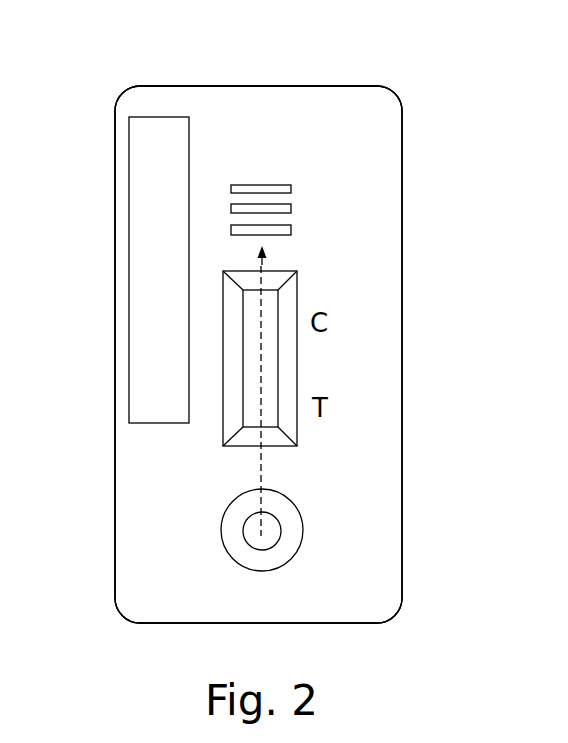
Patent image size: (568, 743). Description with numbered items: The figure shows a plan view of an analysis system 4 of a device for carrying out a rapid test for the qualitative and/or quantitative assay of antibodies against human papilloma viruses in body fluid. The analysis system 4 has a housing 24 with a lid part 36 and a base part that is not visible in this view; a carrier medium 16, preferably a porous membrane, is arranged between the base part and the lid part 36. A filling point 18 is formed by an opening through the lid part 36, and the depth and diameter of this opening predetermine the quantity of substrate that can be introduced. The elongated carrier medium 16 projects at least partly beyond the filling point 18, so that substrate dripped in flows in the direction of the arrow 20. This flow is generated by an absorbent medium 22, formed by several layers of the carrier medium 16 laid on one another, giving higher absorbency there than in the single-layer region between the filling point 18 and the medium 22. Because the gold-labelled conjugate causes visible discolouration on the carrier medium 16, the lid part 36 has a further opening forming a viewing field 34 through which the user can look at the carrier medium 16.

The analysis system 4 is at (478, 190).
The carrier medium 16 is at (268, 345).
The filling point 18 is at (253, 532).
The arrow 20 is at (260, 472).
The medium 22 is at (261, 182).
The housing 24 is at (375, 473).
The viewing field 34 is at (253, 317).
The lid part 36 is at (378, 138).